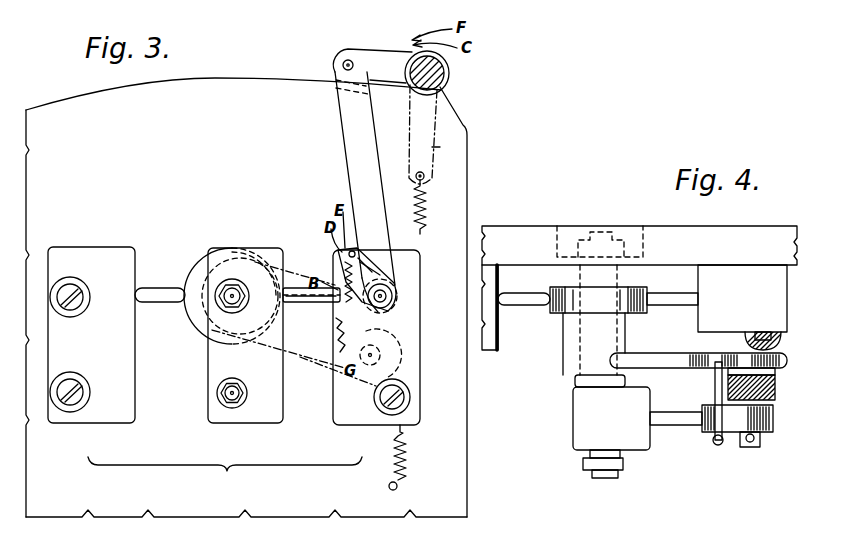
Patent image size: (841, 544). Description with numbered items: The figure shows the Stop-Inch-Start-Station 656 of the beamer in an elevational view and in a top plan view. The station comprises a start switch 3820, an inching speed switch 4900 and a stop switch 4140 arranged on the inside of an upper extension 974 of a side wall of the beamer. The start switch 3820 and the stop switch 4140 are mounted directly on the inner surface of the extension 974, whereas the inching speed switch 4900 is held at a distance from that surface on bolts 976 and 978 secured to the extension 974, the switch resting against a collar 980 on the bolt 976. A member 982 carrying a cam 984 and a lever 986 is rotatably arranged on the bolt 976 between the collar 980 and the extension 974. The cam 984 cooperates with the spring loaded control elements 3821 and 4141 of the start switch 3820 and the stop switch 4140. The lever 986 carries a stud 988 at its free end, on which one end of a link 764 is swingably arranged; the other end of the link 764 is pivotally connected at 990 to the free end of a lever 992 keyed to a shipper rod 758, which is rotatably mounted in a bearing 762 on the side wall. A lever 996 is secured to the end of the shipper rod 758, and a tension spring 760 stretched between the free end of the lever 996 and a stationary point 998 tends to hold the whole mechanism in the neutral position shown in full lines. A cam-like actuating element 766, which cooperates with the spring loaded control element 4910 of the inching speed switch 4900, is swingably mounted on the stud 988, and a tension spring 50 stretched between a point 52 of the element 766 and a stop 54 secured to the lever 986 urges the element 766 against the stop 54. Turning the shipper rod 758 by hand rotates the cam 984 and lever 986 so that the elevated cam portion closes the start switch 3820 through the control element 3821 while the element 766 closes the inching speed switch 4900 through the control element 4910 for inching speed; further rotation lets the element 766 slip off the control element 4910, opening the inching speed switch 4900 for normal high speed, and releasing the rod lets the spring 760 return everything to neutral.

In FIG. 3, the upper extension 974 is at (460, 172).
In FIG. 4, the upper extension 974 is at (727, 233).
In FIG. 3, the stop switch 4140 is at (115, 356).
In FIG. 4, the stop switch 4140 is at (498, 322).
In FIG. 3, the control element 4141 is at (168, 302).
In FIG. 4, the control element 4141 is at (518, 297).
In FIG. 3, the cam 984 is at (200, 256).
In FIG. 4, the cam 984 is at (633, 300).
In FIG. 3, the inching speed switch 4900 is at (266, 374).
In FIG. 4, the inching speed switch 4900 is at (628, 425).
In FIG. 3, the bolt 976 is at (218, 295).
In FIG. 4, the bolt 976 is at (592, 476).
In FIG. 3, the bolt 978 is at (219, 393).
In FIG. 3, the control element 3821 is at (300, 304).
In FIG. 4, the control element 3821 is at (690, 293).
In FIG. 3, the start switch 3820 is at (374, 420).
In FIG. 4, the start switch 3820 is at (745, 283).
In FIG. 3, the link 764 is at (342, 136).
In FIG. 4, the link 764 is at (728, 395).
In FIG. 3, the pivot 990 is at (348, 59).
In FIG. 3, the lever 992 is at (335, 80).
In FIG. 3, the shipper rod 758 is at (449, 70).
In FIG. 3, the bearing 762 is at (452, 101).
In FIG. 3, the lever 996 is at (440, 147).
In FIG. 3, the tension spring 760 is at (428, 208).
In FIG. 3, the stationary point 998 is at (397, 489).
In FIG. 3, the stop 54 is at (351, 250).
In FIG. 4, the stop 54 is at (722, 382).
In FIG. 3, the tension spring 50 is at (366, 262).
In FIG. 4, the tension spring 50 is at (714, 444).
In FIG. 3, the cam-like actuating element 766 is at (370, 262).
In FIG. 4, the cam-like actuating element 766 is at (773, 437).
In FIG. 3, the stud 988 is at (393, 292).
In FIG. 4, the stud 988 is at (752, 450).
In FIG. 3, the point 52 is at (396, 308).
In FIG. 3, the control element 4910 is at (296, 290).
In FIG. 4, the control element 4910 is at (668, 420).
In FIG. 3, the lever 986 is at (285, 260).
In FIG. 4, the lever 986 is at (677, 344).
In FIG. 3, the Stop-Inch-Start-Station 656 is at (225, 476).
In FIG. 4, the member 982 is at (628, 326).
In FIG. 4, the collar 980 is at (575, 384).